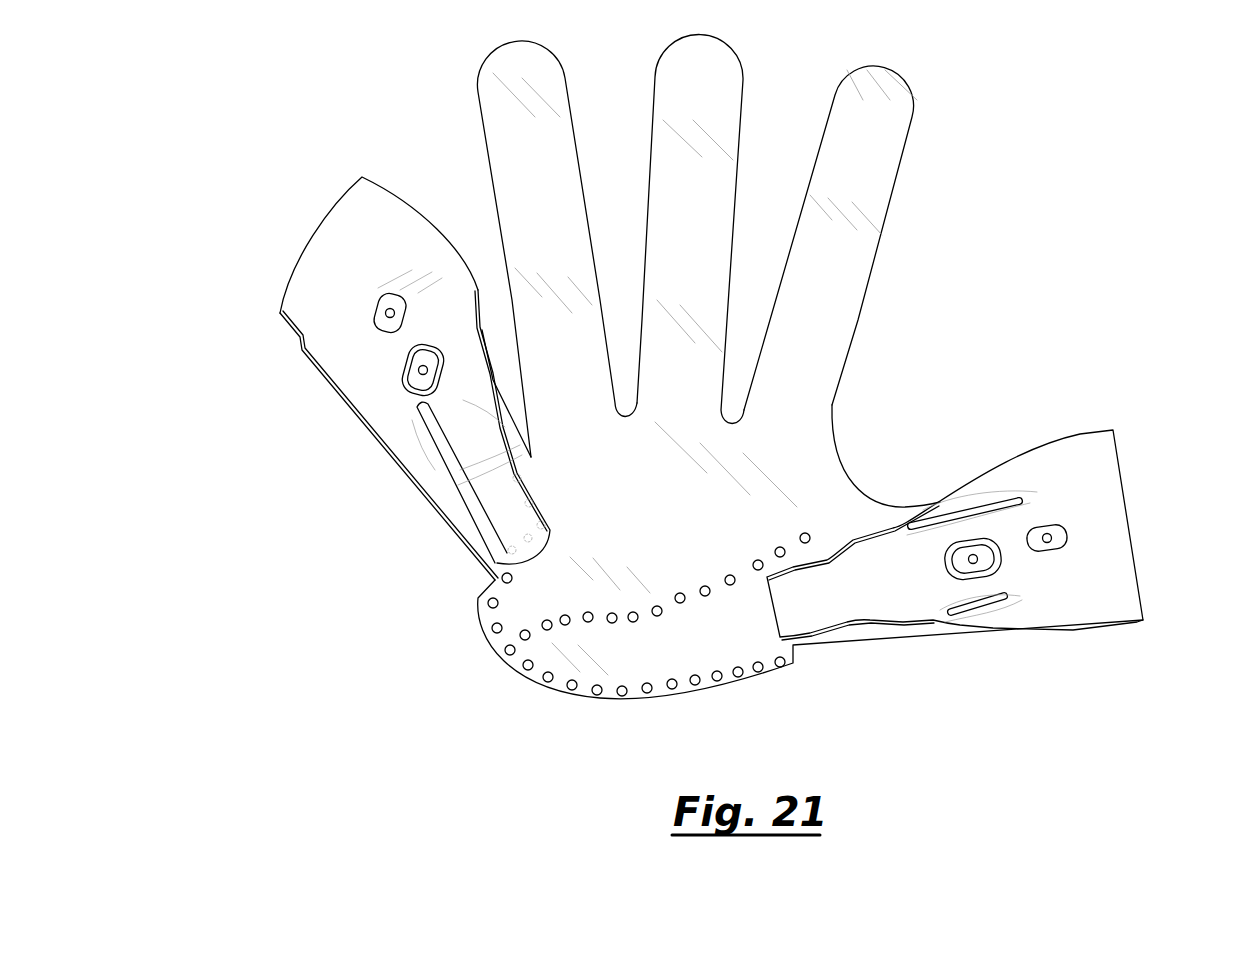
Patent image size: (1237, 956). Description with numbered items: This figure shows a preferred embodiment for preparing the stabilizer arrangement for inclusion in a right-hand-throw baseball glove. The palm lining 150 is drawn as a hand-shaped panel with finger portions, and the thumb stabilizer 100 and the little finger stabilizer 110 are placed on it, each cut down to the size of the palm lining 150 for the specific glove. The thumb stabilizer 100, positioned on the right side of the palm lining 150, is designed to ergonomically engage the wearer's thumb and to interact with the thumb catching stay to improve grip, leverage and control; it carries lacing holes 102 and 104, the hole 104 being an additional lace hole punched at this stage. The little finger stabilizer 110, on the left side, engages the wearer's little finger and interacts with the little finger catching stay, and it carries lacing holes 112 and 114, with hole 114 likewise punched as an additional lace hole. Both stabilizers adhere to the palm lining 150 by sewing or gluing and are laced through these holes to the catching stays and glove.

The thumb stabilizer 100 is at (1094, 479).
The lacing hole 102 is at (992, 546).
The lacing hole 104 is at (1066, 549).
The little finger stabilizer 110 is at (371, 273).
The lacing hole 112 is at (410, 375).
The lacing hole 114 is at (374, 313).
The palm lining 150 is at (658, 482).